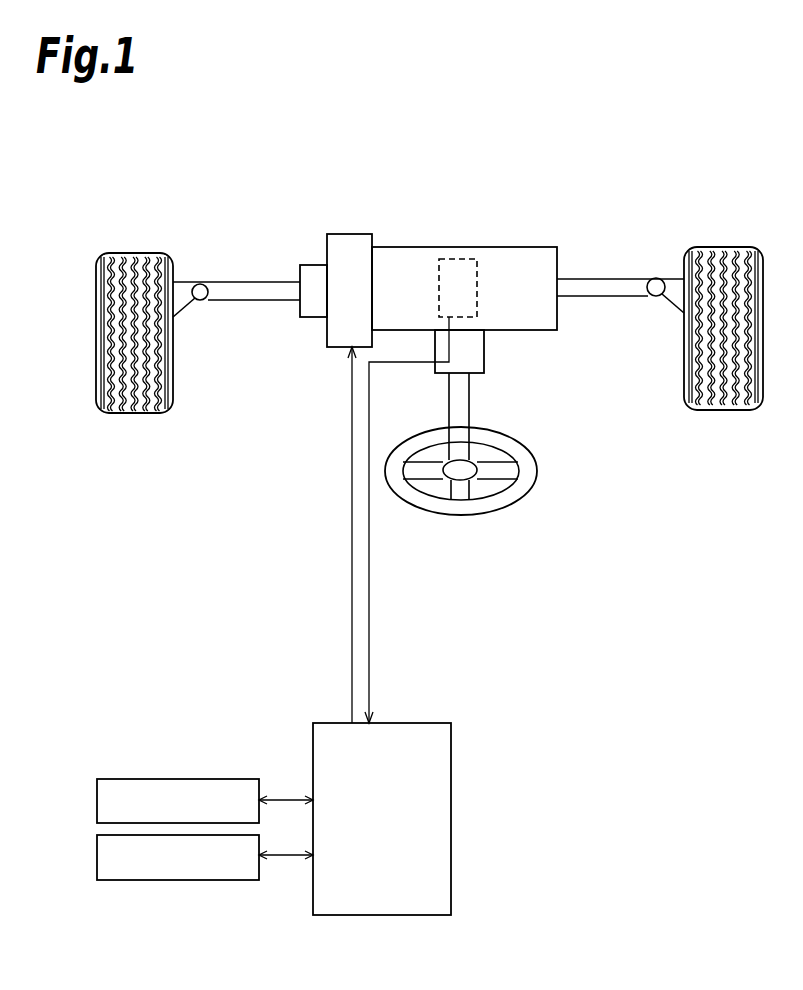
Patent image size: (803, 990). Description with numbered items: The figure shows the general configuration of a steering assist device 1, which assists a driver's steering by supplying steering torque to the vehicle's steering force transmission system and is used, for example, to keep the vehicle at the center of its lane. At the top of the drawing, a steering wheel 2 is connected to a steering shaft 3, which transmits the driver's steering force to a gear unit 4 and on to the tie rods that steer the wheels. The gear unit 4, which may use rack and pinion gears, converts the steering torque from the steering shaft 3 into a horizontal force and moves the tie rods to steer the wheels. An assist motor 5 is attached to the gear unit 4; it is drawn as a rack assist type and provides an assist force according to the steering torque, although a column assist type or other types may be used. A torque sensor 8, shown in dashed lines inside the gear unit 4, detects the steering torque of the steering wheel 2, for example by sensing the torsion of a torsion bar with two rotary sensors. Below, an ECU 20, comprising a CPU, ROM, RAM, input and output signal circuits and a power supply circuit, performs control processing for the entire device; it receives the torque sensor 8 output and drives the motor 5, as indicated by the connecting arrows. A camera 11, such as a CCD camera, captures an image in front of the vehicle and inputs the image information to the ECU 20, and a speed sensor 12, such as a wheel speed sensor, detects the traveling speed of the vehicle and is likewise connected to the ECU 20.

The steering assist device 1 is at (625, 102).
The steering wheel 2 is at (500, 508).
The steering shaft 3 is at (462, 402).
The gear unit 4 is at (508, 245).
The assist motor 5 is at (351, 240).
The torque sensor 8 is at (457, 257).
The camera 11 is at (97, 797).
The speed sensor 12 is at (97, 855).
The ECU 20 is at (451, 807).